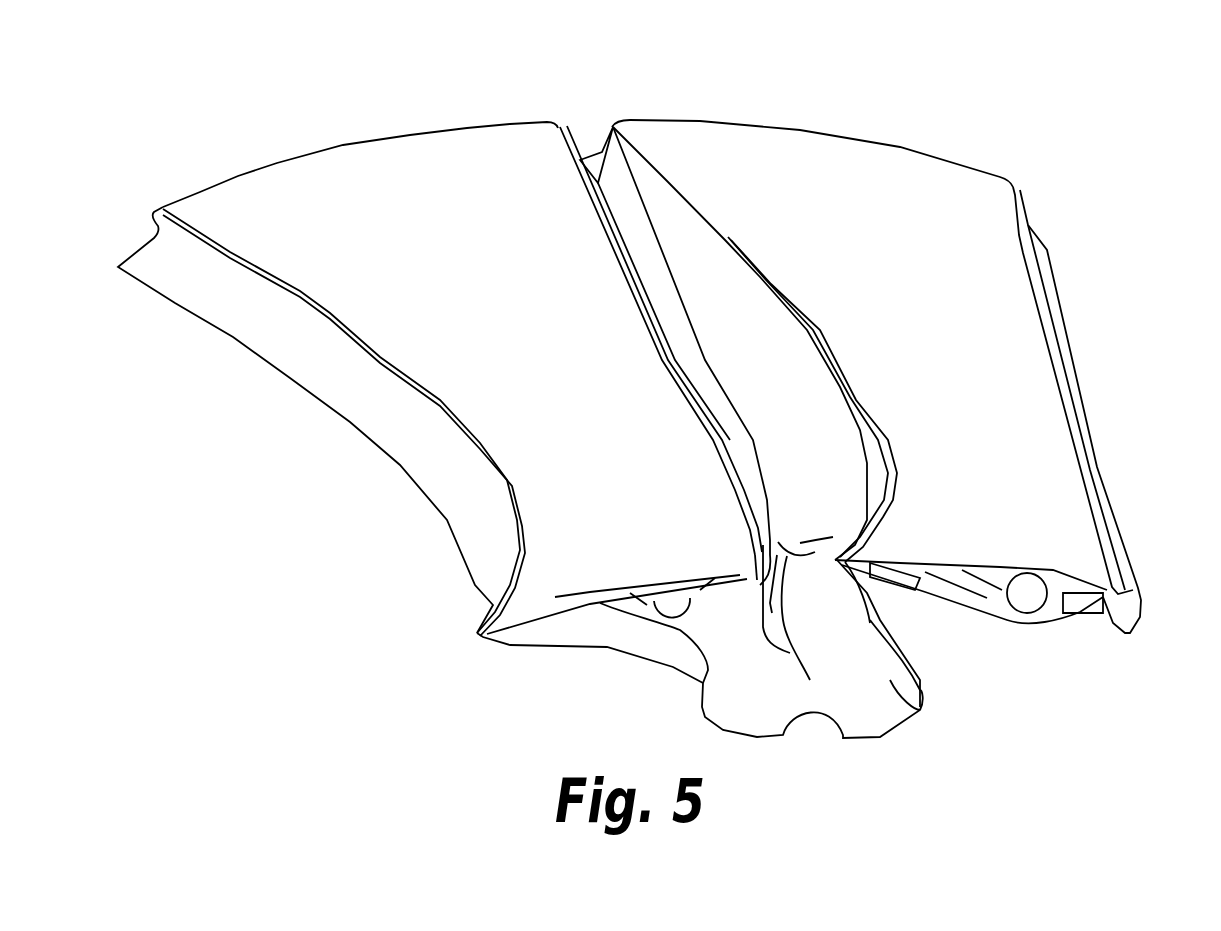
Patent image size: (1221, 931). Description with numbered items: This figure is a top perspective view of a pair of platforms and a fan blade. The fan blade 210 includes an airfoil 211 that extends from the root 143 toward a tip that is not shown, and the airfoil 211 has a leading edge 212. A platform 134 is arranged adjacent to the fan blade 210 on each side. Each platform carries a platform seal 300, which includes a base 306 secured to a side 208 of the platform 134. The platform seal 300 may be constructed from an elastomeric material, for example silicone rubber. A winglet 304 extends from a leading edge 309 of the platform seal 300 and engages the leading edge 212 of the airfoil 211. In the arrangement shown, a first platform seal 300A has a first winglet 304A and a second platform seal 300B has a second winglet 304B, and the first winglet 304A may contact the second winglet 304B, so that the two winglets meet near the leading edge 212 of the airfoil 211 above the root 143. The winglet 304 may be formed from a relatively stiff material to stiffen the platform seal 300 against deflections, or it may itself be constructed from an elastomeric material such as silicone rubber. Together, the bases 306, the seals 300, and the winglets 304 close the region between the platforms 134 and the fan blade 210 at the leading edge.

The platform 134 is at (428, 160).
The fan blade 210 is at (666, 185).
The airfoil 211 is at (717, 257).
The platform seal 300 is at (365, 383).
The first platform seal 300A is at (822, 357).
The second platform seal 300B is at (620, 263).
The side of the platform 208 is at (440, 398).
The base 306 is at (523, 547).
The leading edge of the platform seal 309 is at (833, 560).
The winglet 304 is at (475, 637).
The first winglet 304A is at (882, 529).
The second winglet 304B is at (790, 653).
The leading edge of the airfoil 212 is at (870, 623).
The root 143 is at (920, 712).